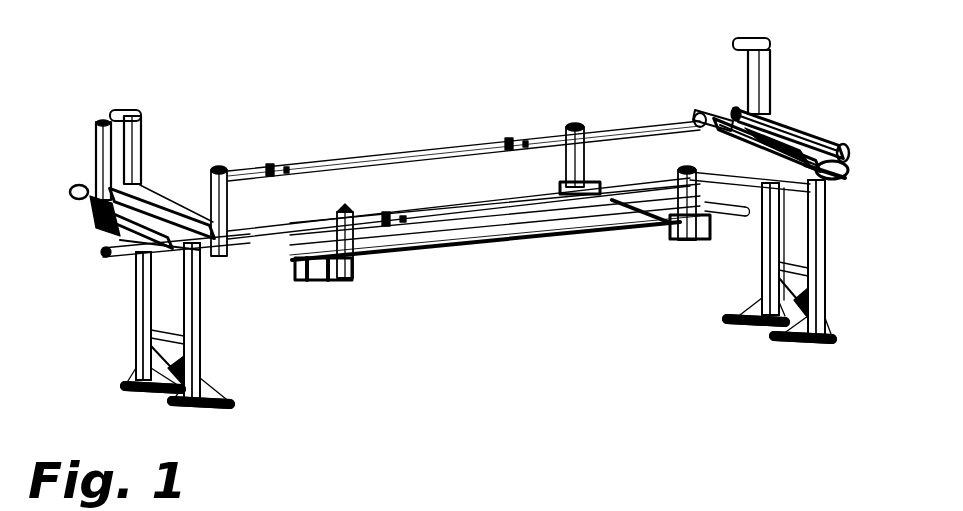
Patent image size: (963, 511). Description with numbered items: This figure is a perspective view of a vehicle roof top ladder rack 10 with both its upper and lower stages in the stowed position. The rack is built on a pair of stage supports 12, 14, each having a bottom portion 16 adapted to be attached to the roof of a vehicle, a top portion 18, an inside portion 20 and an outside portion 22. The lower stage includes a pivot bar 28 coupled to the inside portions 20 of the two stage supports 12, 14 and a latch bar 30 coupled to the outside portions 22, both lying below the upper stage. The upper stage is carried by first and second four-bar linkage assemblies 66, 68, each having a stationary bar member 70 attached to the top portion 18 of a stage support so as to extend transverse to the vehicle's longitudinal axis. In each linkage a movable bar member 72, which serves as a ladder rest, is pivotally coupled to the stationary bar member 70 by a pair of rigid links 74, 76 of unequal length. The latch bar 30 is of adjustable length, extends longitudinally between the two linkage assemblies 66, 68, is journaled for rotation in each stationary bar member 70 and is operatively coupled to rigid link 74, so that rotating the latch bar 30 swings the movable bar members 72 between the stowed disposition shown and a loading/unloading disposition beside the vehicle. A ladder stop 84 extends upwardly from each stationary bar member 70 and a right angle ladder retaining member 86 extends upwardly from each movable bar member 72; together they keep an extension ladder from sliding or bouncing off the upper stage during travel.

The vehicle roof rack 10 is at (499, 126).
The stage support 12 is at (210, 353).
The stage support 14 is at (753, 260).
The bottom portion 16 is at (200, 410).
The top portion 18 is at (213, 268).
The inside portion 20 is at (140, 290).
The outside portion 22 is at (193, 327).
The pivot bar 28 is at (380, 153).
The latch bar 30 is at (472, 220).
The first 4-bar linkage assembly 66 is at (167, 190).
The second 4-bar linkage assembly 68 is at (790, 113).
The stationary bar member 70 is at (847, 174).
The movable bar member 72 is at (823, 141).
The rigid link 74 is at (700, 128).
The rigid link 76 is at (767, 141).
The ladder stop 84 is at (100, 156).
The right angle ladder retaining member 86 is at (141, 133).